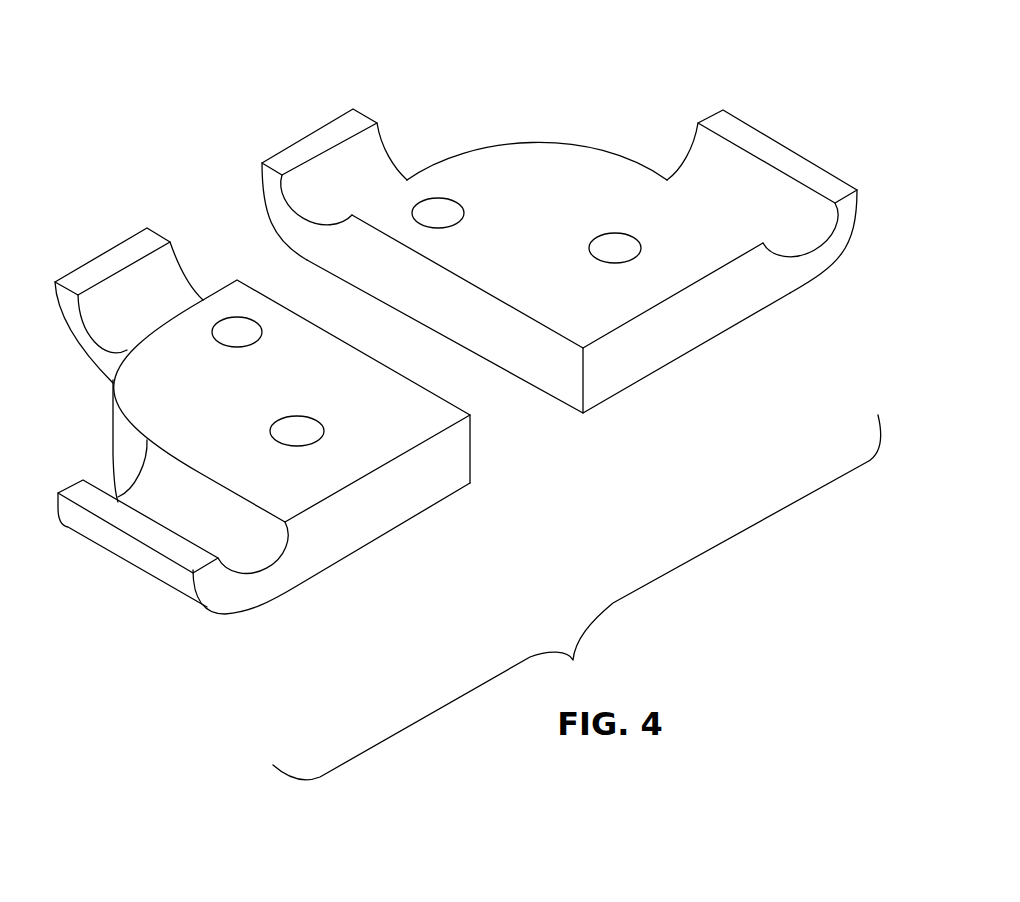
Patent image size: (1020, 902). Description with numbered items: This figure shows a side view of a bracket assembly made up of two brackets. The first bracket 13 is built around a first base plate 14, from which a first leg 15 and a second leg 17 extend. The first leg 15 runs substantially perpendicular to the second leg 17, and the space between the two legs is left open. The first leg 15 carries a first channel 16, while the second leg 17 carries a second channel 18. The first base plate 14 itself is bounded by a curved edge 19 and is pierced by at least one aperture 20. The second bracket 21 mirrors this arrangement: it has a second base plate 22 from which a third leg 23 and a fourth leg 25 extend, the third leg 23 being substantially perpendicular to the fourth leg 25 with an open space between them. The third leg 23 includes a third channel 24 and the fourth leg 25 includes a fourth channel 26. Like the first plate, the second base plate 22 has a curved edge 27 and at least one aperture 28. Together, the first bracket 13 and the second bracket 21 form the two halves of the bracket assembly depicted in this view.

The first bracket 13 is at (747, 355).
The first base plate 14 is at (597, 310).
The first leg 15 is at (788, 130).
The first channel 16 is at (767, 215).
The second leg 17 is at (302, 130).
The second channel 18 is at (338, 194).
The curved edge 19 is at (543, 130).
The aperture 20 is at (439, 207).
The second bracket 21 is at (435, 530).
The second base plate 22 is at (302, 487).
The third leg 23 is at (110, 566).
The third channel 24 is at (240, 539).
The fourth leg 25 is at (98, 252).
The fourth channel 26 is at (147, 292).
The curved edge 27 is at (103, 411).
The aperture 28 is at (308, 427).